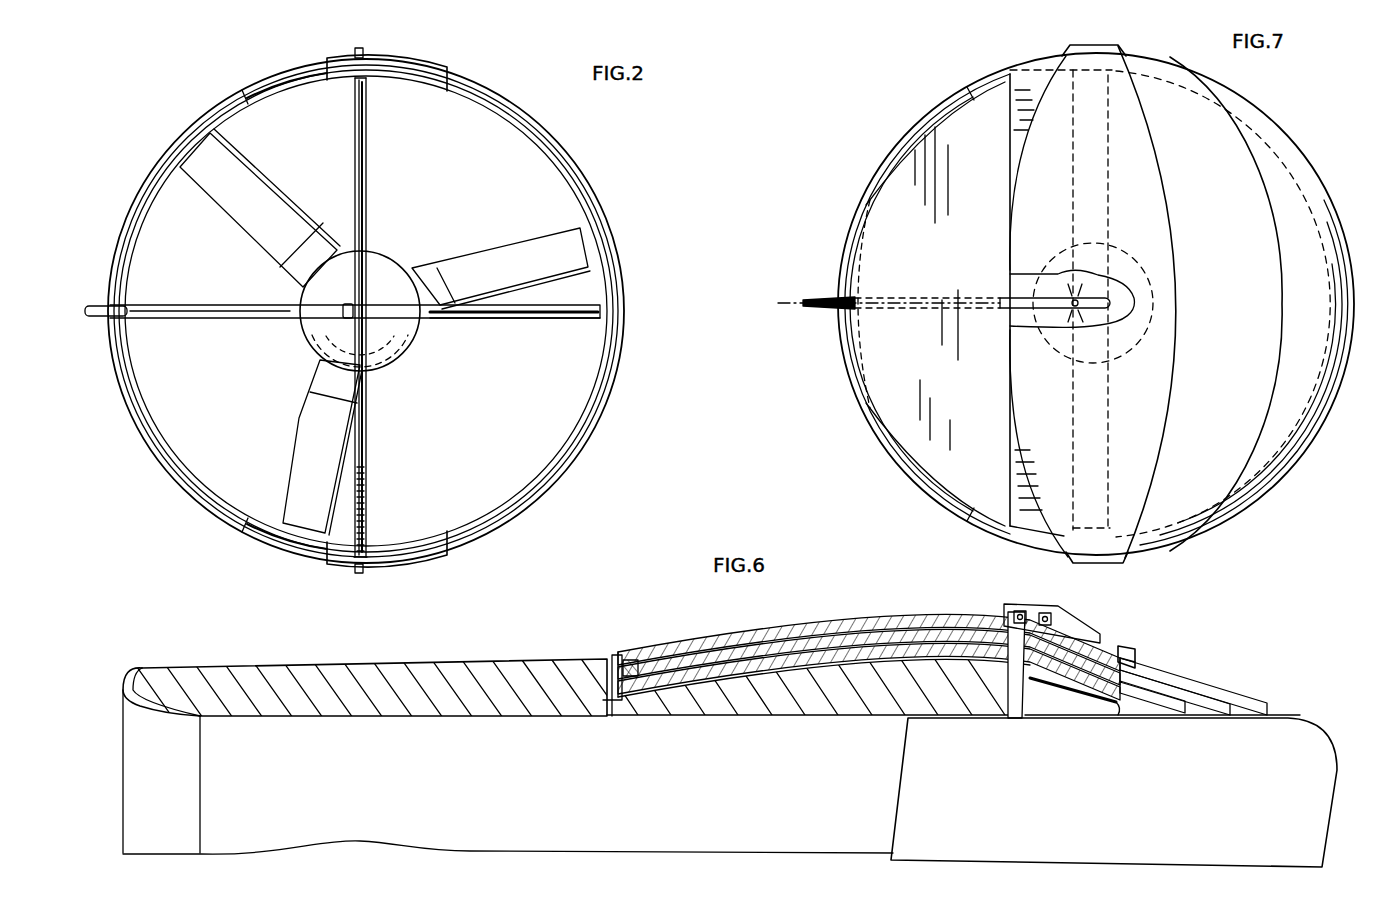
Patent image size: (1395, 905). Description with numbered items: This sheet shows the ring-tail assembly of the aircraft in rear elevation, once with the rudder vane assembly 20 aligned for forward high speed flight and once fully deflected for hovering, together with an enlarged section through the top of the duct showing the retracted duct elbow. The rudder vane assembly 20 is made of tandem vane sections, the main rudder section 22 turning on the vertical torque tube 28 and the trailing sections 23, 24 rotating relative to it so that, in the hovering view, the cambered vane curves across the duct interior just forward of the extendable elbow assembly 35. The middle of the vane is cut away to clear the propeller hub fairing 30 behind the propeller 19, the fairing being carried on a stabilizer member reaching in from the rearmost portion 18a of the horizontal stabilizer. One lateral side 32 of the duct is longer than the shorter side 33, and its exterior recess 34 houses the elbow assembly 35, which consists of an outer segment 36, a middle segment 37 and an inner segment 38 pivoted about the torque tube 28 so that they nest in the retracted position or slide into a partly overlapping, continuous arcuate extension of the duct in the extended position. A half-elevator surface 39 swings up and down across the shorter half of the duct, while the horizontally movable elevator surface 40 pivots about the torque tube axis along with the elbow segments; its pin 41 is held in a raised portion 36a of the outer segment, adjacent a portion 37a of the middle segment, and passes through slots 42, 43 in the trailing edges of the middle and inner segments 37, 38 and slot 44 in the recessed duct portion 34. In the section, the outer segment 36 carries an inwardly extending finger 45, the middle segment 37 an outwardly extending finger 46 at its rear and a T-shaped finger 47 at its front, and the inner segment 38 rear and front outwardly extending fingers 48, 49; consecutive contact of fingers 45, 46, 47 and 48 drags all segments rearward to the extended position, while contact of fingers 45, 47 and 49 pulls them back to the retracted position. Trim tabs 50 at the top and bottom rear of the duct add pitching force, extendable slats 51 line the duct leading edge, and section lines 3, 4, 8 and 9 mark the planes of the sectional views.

In FIG. 2, the section line 3- 3 is at (66, 311).
In FIG. 2, the section line 4- 4 is at (357, 16).
In FIG. 7, the section line 8- 8 is at (1090, 8).
In FIG. 7, the section line 9- 9 is at (772, 303).
In FIG. 2, the rearmost portion of the horizontal stabilizer 18a is at (95, 304).
In FIG. 7, the rearmost portion of the horizontal stabilizer 18a is at (820, 300).
In FIG. 2, the propeller 19 is at (332, 244).
In FIG. 2, the rudder vane assembly 20 is at (372, 141).
In FIG. 7, the main rudder section 22 is at (1095, 203).
In FIG. 7, the vane section 23 is at (1028, 90).
In FIG. 2, the vane section 24 is at (369, 203).
In FIG. 7, the vane section 24 is at (915, 237).
In FIG. 2, the torque tube 28 is at (366, 53).
In FIG. 2, the propeller hub fairing 30 is at (390, 344).
In FIG. 6, the longer lateral side of the duct 32 is at (572, 673).
In FIG. 7, the shorter side of the duct 33 is at (898, 453).
In FIG. 6, the recess 34 is at (752, 674).
In FIG. 2, the multi-segment extendable duct elbow assembly 35 is at (620, 252).
In FIG. 7, the outer elbow segment 36 is at (1152, 225).
In FIG. 6, the outer elbow segment 36 is at (1240, 701).
In FIG. 6, the raised portion of the outer elbow segment 36a is at (972, 627).
In FIG. 7, the middle elbow segment 37 is at (1239, 237).
In FIG. 6, the middle elbow segment 37 is at (1218, 701).
In FIG. 6, the fin layer 37a is at (896, 643).
In FIG. 7, the inner elbow segment 38 is at (1295, 163).
In FIG. 6, the inner elbow segment 38 is at (858, 661).
In FIG. 2, the half-elevator surface 39 is at (225, 304).
In FIG. 7, the half-elevator surface 39 is at (916, 321).
In FIG. 2, the movable elevator surface 40 is at (514, 321).
In FIG. 7, the movable elevator surface 40 is at (1037, 314).
In FIG. 6, the movable elevator surface 40 is at (1099, 791).
In FIG. 7, the pin 41 is at (1092, 318).
In FIG. 6, the pin 41 is at (1024, 630).
In FIG. 6, the slot 42 is at (1110, 670).
In FIG. 6, the slot 43 is at (1075, 655).
In FIG. 6, the slot 44 is at (1063, 703).
In FIG. 6, the inwardly extending finger 45 is at (642, 656).
In FIG. 6, the outwardly extending finger 46 is at (1136, 666).
In FIG. 6, the T-shaped finger 47 is at (606, 666).
In FIG. 6, the outwardly extending finger 48 is at (1110, 704).
In FIG. 6, the outwardly extending finger 49 is at (605, 700).
In FIG. 2, the trim tabs 50 is at (296, 71).
In FIG. 7, the trim tabs 50 is at (987, 76).
In FIG. 6, the extendable slats 51 is at (127, 667).